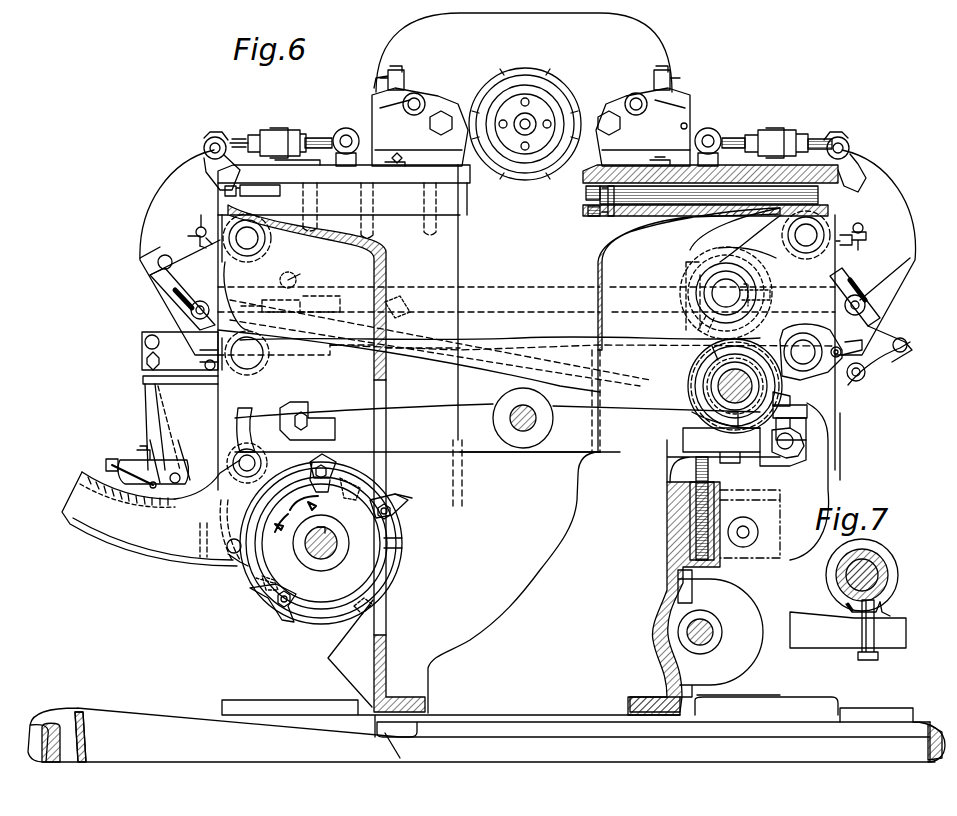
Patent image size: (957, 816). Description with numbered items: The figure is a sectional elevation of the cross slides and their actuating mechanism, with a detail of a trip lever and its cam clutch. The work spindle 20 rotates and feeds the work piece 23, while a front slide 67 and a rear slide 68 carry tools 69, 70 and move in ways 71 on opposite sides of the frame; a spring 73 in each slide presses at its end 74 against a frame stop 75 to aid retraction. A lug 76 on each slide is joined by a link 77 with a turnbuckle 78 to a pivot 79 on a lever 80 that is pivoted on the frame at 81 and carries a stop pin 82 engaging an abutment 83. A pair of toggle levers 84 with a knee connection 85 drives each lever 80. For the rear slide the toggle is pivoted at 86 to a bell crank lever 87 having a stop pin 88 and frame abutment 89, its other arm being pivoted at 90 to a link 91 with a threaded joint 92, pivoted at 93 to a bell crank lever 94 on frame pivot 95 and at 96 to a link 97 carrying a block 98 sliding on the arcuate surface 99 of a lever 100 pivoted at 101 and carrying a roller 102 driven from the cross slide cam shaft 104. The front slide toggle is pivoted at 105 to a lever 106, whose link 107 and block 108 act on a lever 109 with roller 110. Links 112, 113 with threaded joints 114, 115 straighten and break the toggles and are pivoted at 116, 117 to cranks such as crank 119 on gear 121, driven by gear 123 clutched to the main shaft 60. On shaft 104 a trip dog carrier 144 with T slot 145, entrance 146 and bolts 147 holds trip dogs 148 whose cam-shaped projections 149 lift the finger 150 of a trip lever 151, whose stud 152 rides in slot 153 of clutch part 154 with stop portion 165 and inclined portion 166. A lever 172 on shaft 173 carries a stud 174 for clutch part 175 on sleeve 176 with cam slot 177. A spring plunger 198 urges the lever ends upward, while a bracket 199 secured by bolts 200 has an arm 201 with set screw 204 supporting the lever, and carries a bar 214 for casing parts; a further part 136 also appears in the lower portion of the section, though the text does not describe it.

In FIG. 6, the work spindle 20 is at (538, 108).
In FIG. 6, the work piece 23 is at (518, 135).
In FIG. 6, the main shaft 60 is at (710, 378).
In FIG. 7, the main shaft 60 is at (874, 566).
In FIG. 6, the front slide 67 is at (422, 160).
In FIG. 6, the rear slide 68 is at (626, 160).
In FIG. 6, the tool 69 is at (435, 98).
In FIG. 6, the tool 70 is at (626, 98).
In FIG. 6, the ways 71 is at (458, 205).
In FIG. 6, the spring 73 is at (720, 192).
In FIG. 6, the end of spring 74 is at (626, 206).
In FIG. 6, the stop 75 is at (612, 218).
In FIG. 6, the lug 76 is at (346, 128).
In FIG. 6, the link 77 is at (246, 134).
In FIG. 6, the turnbuckle 78 is at (282, 130).
In FIG. 6, the pivotal connection 79 is at (206, 142).
In FIG. 6, the lever 80 is at (178, 170).
In FIG. 6, the pivot 81 is at (258, 240).
In FIG. 6, the stop pin 82 is at (197, 228).
In FIG. 6, the abutment 83 is at (196, 241).
In FIG. 6, the toggle levers 84 is at (180, 310).
In FIG. 6, the knee connection 85 is at (212, 300).
In FIG. 6, the pivot 86 is at (900, 352).
In FIG. 6, the bell crank lever 87 is at (860, 384).
In FIG. 6, the stop pin 88 is at (864, 366).
In FIG. 6, the frame abutment 89 is at (846, 350).
In FIG. 6, the pivotal connection 90 is at (806, 440).
In FIG. 6, the link 91 is at (512, 373).
In FIG. 6, the threaded joint 92 is at (400, 302).
In FIG. 6, the pivot 93 is at (292, 284).
In FIG. 6, the bell crank lever 94 is at (290, 315).
In FIG. 6, the pivot 95 is at (258, 358).
In FIG. 6, the pivot 96 is at (143, 380).
In FIG. 6, the link 97 is at (148, 392).
In FIG. 6, the block 98 is at (112, 462).
In FIG. 6, the arcuate surface 99 is at (204, 478).
In FIG. 6, the lever 100 is at (78, 524).
In FIG. 6, the pivot 101 is at (244, 452).
In FIG. 6, the roller 102 is at (236, 538).
In FIG. 6, the cross slide cam shaft 104 is at (316, 568).
In FIG. 6, the pivot 105 is at (145, 340).
In FIG. 6, the lever 106 is at (144, 356).
In FIG. 6, the link 107 is at (168, 424).
In FIG. 6, the block 108 is at (140, 448).
In FIG. 6, the lever 109 is at (84, 478).
In FIG. 6, the roller 110 is at (236, 562).
In FIG. 6, the link 112 is at (546, 292).
In FIG. 6, the link 113 is at (806, 338).
In FIG. 6, the threaded joint 114 is at (312, 314).
In FIG. 6, the threaded joint 115 is at (776, 300).
In FIG. 6, the pivotal connection 116 is at (726, 293).
In FIG. 6, the pivotal connection 117 is at (706, 338).
In FIG. 6, the crank 119 is at (786, 392).
In FIG. 6, the gear 121 is at (772, 274).
In FIG. 6, the gear 123 is at (714, 356).
In FIG. 6, the shaft 136 is at (712, 618).
In FIG. 6, the trip dog carrier 144 is at (302, 620).
In FIG. 6, the T slot 145 is at (396, 560).
In FIG. 6, the entrance 146 is at (400, 540).
In FIG. 6, the bolts 147 is at (360, 530).
In FIG. 6, the trip dog 148 is at (404, 512).
In FIG. 6, the cam-shaped projection 149 is at (404, 500).
In FIG. 6, the cam-shaped finger 150 is at (380, 466).
In FIG. 6, the trip lever 151 is at (352, 418).
In FIG. 7, the trip lever 151 is at (832, 640).
In FIG. 7, the stud 152 is at (846, 606).
In FIG. 7, the slot 153 is at (836, 576).
In FIG. 7, the clutch part 154 is at (846, 580).
In FIG. 7, the stop portion 165 is at (888, 594).
In FIG. 7, the inclined portion 166 is at (876, 625).
In FIG. 6, the lever 172 is at (640, 452).
In FIG. 6, the shaft 173 is at (528, 428).
In FIG. 6, the stud 174 is at (730, 440).
In FIG. 6, the clutch part 175 is at (707, 392).
In FIG. 6, the sleeve 176 is at (703, 370).
In FIG. 6, the cam slot 177 is at (700, 412).
In FIG. 6, the spring plunger 198 is at (718, 514).
In FIG. 6, the bracket 199 is at (806, 470).
In FIG. 6, the bolts 200 is at (808, 486).
In FIG. 6, the arm 201 is at (812, 426).
In FIG. 6, the set screw 204 is at (800, 410).
In FIG. 6, the bar 214 is at (760, 526).